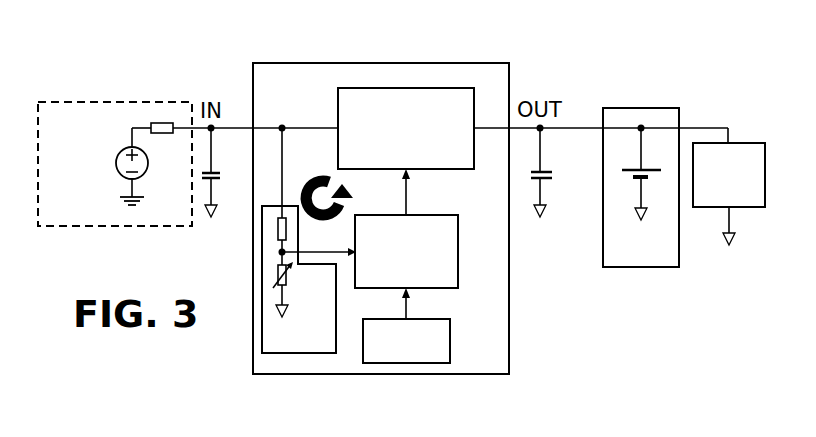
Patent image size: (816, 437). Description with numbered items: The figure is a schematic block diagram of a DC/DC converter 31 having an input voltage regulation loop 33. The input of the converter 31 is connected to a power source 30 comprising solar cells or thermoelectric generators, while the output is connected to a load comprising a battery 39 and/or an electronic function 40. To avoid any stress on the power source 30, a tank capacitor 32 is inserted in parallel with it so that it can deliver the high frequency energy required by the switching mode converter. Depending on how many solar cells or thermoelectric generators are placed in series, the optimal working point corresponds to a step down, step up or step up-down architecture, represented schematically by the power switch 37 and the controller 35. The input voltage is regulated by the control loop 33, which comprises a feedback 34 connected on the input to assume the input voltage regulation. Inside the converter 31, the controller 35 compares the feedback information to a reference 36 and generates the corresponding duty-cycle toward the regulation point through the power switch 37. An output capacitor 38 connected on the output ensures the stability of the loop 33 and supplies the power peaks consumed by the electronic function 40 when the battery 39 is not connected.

The power source 30 is at (63, 102).
The DC/DC converter 31 is at (299, 62).
The tank capacitor 32 is at (207, 188).
The input voltage regulation loop 33 is at (316, 175).
The feedback 34 is at (263, 337).
The controller 35 is at (458, 265).
The reference 36 is at (384, 363).
The power switch 37 is at (456, 88).
The output capacitor 38 is at (545, 180).
The battery 39 is at (662, 108).
The electronic function 40 is at (748, 142).